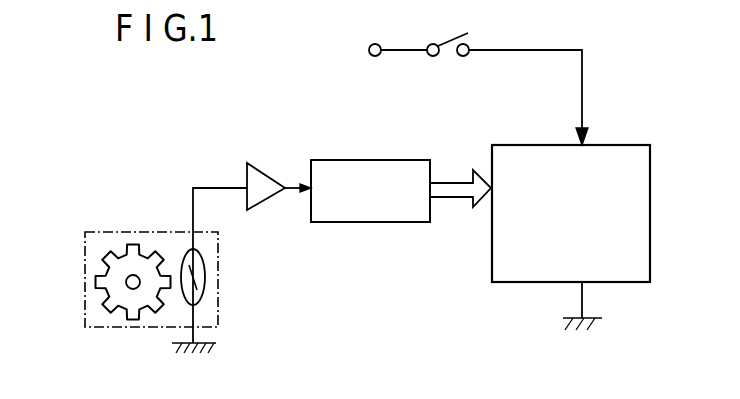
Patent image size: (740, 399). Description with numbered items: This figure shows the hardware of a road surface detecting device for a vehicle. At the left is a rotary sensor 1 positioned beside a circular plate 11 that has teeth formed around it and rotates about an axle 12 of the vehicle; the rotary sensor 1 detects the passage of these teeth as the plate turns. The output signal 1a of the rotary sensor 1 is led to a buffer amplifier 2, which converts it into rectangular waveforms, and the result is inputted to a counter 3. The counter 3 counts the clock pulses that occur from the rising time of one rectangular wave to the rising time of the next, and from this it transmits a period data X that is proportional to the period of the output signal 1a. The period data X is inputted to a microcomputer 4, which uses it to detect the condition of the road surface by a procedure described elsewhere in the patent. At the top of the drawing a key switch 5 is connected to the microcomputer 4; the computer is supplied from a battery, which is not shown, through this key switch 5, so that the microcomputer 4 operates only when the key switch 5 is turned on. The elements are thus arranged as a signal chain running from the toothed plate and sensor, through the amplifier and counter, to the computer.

The rotary sensor 1 is at (218, 270).
The output signal 1a is at (200, 186).
The buffer amplifier 2 is at (268, 180).
The counter 3 is at (395, 160).
The microcomputer 4 is at (636, 145).
The key switch 5 is at (452, 41).
The circular plate 11 is at (112, 277).
The axle 12 is at (138, 285).
The period data X is at (452, 198).